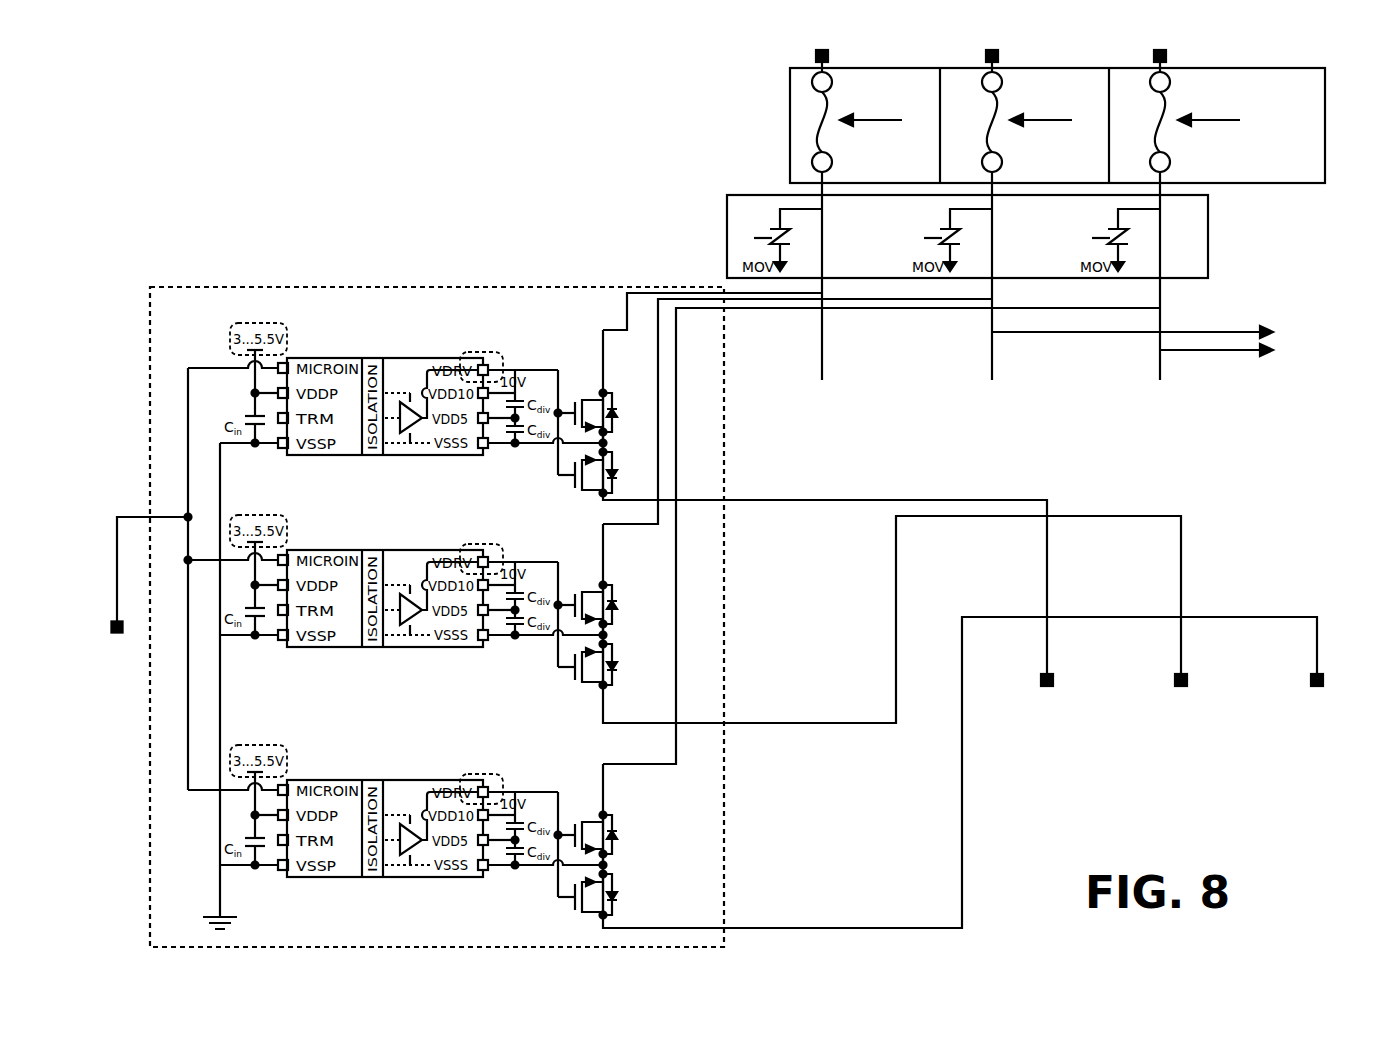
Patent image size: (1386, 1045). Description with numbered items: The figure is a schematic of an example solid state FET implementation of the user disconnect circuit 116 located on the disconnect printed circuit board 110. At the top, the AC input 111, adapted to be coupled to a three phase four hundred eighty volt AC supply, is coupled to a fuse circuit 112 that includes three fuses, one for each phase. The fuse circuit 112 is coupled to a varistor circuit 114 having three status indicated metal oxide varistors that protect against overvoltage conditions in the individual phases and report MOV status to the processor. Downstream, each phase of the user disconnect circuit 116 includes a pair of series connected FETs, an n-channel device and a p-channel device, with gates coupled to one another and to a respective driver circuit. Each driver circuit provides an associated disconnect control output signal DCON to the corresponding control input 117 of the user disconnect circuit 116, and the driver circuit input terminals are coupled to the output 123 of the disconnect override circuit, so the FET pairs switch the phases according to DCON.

The disconnect printed circuit board 110 is at (300, 160).
The AC input 111 is at (814, 60).
The fuse circuit 112 is at (790, 128).
The varistor circuit 114 is at (745, 195).
The user disconnect circuit 116 is at (217, 287).
The control input 117 is at (538, 368).
The output 123 is at (133, 517).